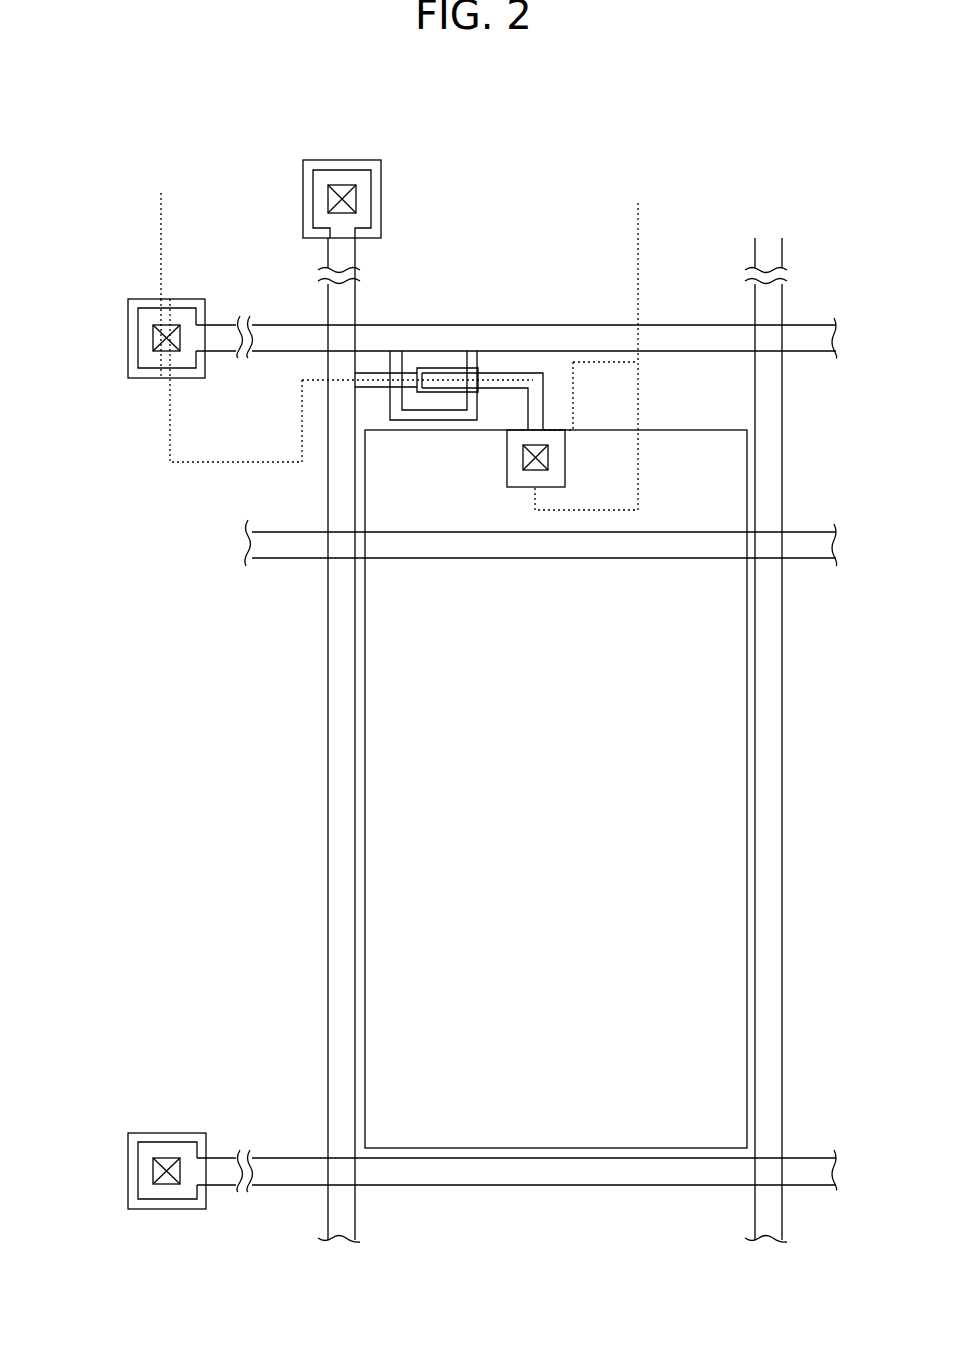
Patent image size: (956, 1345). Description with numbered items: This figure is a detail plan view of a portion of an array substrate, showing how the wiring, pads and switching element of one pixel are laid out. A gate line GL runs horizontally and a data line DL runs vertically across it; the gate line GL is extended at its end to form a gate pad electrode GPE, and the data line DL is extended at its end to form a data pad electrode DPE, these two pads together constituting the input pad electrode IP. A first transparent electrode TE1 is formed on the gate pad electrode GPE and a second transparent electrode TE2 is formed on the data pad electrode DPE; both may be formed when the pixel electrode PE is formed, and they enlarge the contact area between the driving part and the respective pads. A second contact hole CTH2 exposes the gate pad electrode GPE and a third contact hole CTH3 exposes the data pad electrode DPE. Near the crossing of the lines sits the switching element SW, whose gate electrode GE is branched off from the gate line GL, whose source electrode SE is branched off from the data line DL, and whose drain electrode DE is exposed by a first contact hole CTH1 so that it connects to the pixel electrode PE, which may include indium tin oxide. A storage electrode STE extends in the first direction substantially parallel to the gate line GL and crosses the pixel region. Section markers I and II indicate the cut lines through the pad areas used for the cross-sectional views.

The input pad electrode IP is at (240, 118).
The gate pad electrode GPE is at (150, 308).
The data pad electrode DPE is at (323, 170).
The first transparent electrode TE1 is at (128, 335).
The second transparent electrode TE2 is at (352, 160).
The first contact hole CTH1 is at (523, 457).
The second contact hole CTH2 is at (156, 343).
The third contact hole CTH3 is at (346, 188).
The data line DL is at (333, 299).
The gate line GL is at (267, 354).
The storage electrode STE is at (250, 543).
The switching element SW is at (533, 270).
The source electrode SE is at (377, 377).
The gate electrode GE is at (465, 351).
The drain electrode DE is at (526, 373).
The pixel electrode PE is at (432, 710).
The section line I-I' I is at (638, 203).
The section line II-II' II is at (162, 1133).